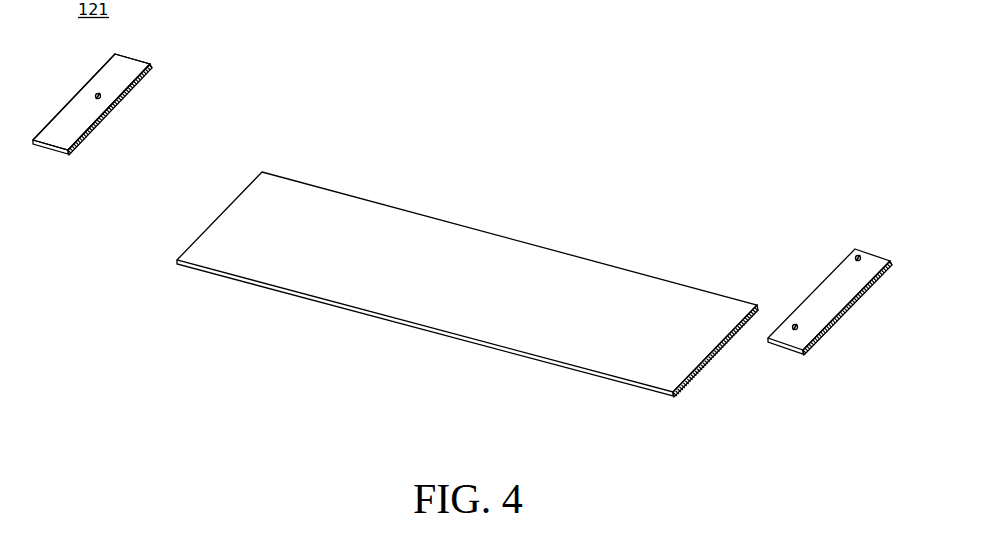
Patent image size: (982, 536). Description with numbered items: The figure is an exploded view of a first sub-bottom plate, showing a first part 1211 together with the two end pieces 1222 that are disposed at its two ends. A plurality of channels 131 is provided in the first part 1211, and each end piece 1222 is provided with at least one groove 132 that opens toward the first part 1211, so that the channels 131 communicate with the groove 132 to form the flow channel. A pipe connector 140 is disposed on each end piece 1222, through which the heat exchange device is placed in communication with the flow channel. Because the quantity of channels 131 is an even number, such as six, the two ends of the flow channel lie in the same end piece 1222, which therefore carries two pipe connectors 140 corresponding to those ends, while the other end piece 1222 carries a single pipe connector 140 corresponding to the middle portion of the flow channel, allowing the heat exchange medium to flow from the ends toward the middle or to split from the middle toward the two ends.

The first part 1211 is at (367, 217).
The channels 131 is at (717, 355).
The groove 132 is at (84, 142).
The end plate 1222 is at (140, 81).
The pipe connector 140 is at (103, 92).